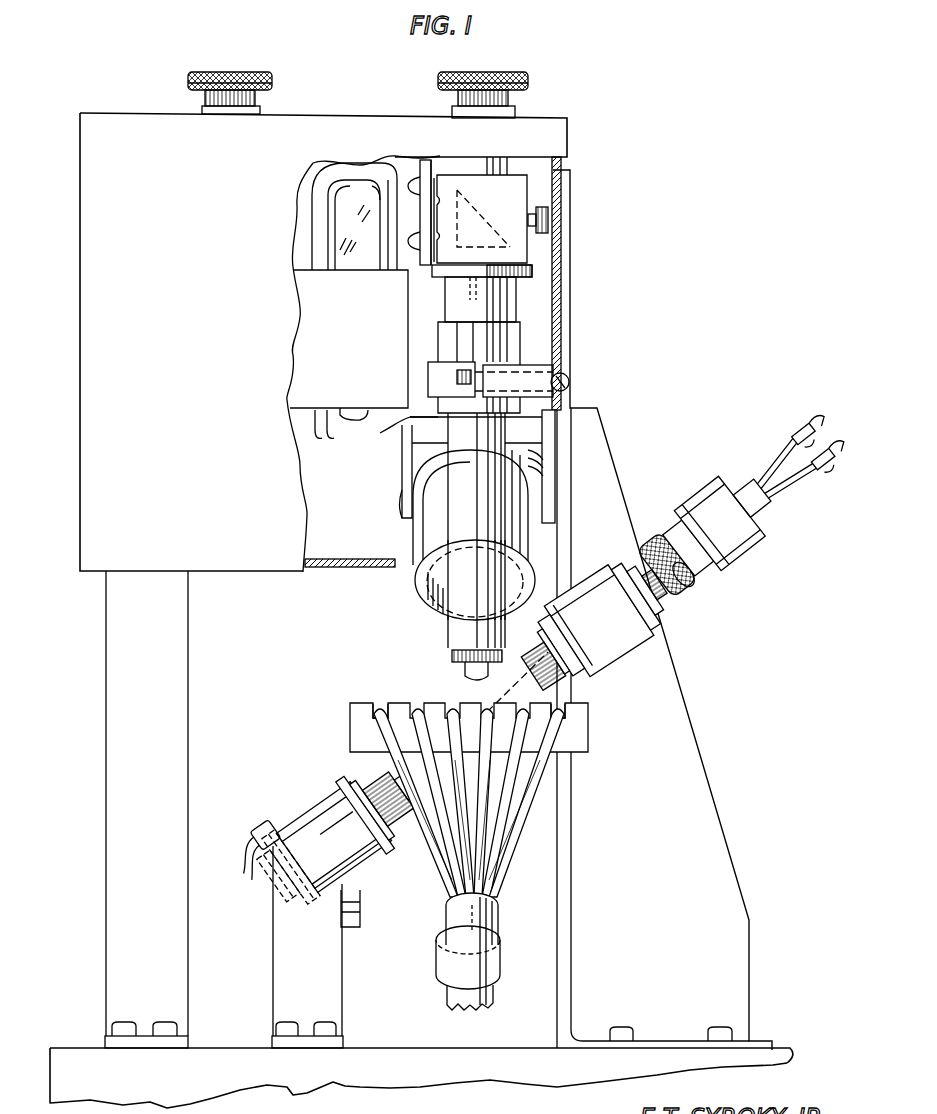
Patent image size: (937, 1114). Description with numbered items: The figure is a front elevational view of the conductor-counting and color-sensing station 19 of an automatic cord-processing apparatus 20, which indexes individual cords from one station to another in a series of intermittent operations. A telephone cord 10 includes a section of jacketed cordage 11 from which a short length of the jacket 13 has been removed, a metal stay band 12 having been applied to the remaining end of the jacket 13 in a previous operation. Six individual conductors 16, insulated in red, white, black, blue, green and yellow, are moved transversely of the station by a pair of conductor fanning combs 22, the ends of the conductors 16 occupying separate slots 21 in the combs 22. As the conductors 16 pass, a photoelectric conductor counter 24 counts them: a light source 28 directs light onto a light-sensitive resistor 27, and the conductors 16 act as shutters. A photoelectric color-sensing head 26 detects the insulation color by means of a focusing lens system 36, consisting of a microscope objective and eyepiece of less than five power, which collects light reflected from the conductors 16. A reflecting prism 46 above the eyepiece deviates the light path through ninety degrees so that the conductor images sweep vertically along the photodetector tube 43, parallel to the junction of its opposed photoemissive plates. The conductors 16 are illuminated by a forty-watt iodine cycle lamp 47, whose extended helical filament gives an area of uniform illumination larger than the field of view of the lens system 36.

The telephone cord 10 is at (430, 912).
The section of jacketed cordage 11 is at (494, 927).
The metal stay band 12 is at (497, 963).
The jacket 13 is at (444, 935).
The individual conductors 16 is at (512, 858).
The conductor-counting and color-sensing station 19 is at (630, 167).
The cord-processing apparatus 20 is at (622, 425).
The slots 21 is at (380, 712).
The conductor fanning combs 22 is at (478, 710).
The photoelectric conductor counter 24 is at (750, 576).
The photoelectric color-sensing head 26 is at (560, 222).
The light-sensitive resistor 27 is at (318, 797).
The light source 28 is at (632, 655).
The focusing lens system 36 is at (520, 308).
The photodetector tube 43 is at (312, 202).
The reflecting prism 46 is at (465, 202).
The iodine cycle lamp 47 is at (534, 552).